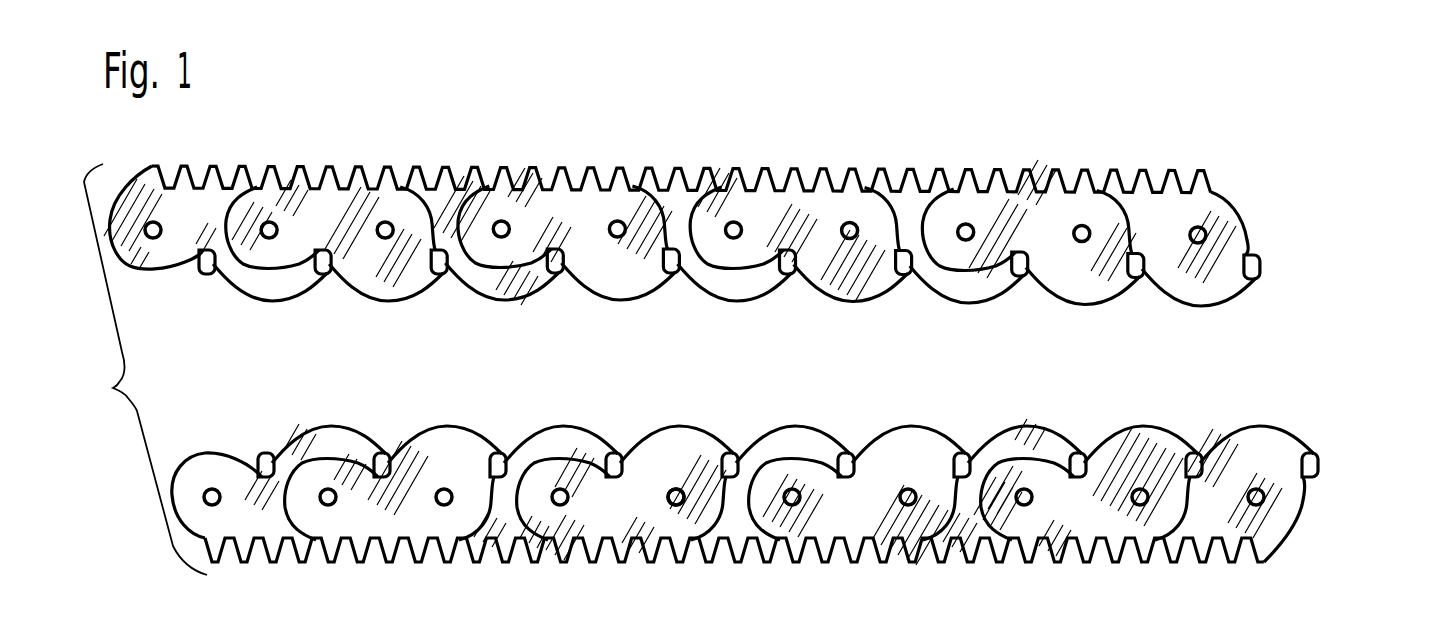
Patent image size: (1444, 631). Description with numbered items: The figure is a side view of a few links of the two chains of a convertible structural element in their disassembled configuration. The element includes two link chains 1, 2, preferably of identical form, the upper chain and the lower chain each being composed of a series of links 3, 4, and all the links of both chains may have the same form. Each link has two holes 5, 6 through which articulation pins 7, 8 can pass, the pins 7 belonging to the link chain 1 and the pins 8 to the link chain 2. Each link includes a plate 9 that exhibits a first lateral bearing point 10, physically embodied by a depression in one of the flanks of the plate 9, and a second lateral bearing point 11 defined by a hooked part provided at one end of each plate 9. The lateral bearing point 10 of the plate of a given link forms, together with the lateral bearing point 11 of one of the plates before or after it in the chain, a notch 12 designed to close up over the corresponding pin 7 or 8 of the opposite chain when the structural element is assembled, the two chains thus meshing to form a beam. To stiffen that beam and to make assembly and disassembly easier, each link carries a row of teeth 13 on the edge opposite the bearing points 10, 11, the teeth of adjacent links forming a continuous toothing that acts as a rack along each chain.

The link chain 1 is at (1281, 249).
The link chain 2 is at (1338, 488).
The link 3 is at (1080, 316).
The link 4 is at (659, 409).
The hole 5 is at (500, 240).
The hole 6 is at (443, 488).
The articulation pin 7 is at (616, 219).
The articulation pin 8 is at (675, 506).
The plate 9 is at (1062, 212).
The first lateral bearing point 10 is at (862, 458).
The second lateral bearing point 11 is at (966, 458).
The notch 12 is at (796, 265).
The row of teeth 13 is at (938, 172).